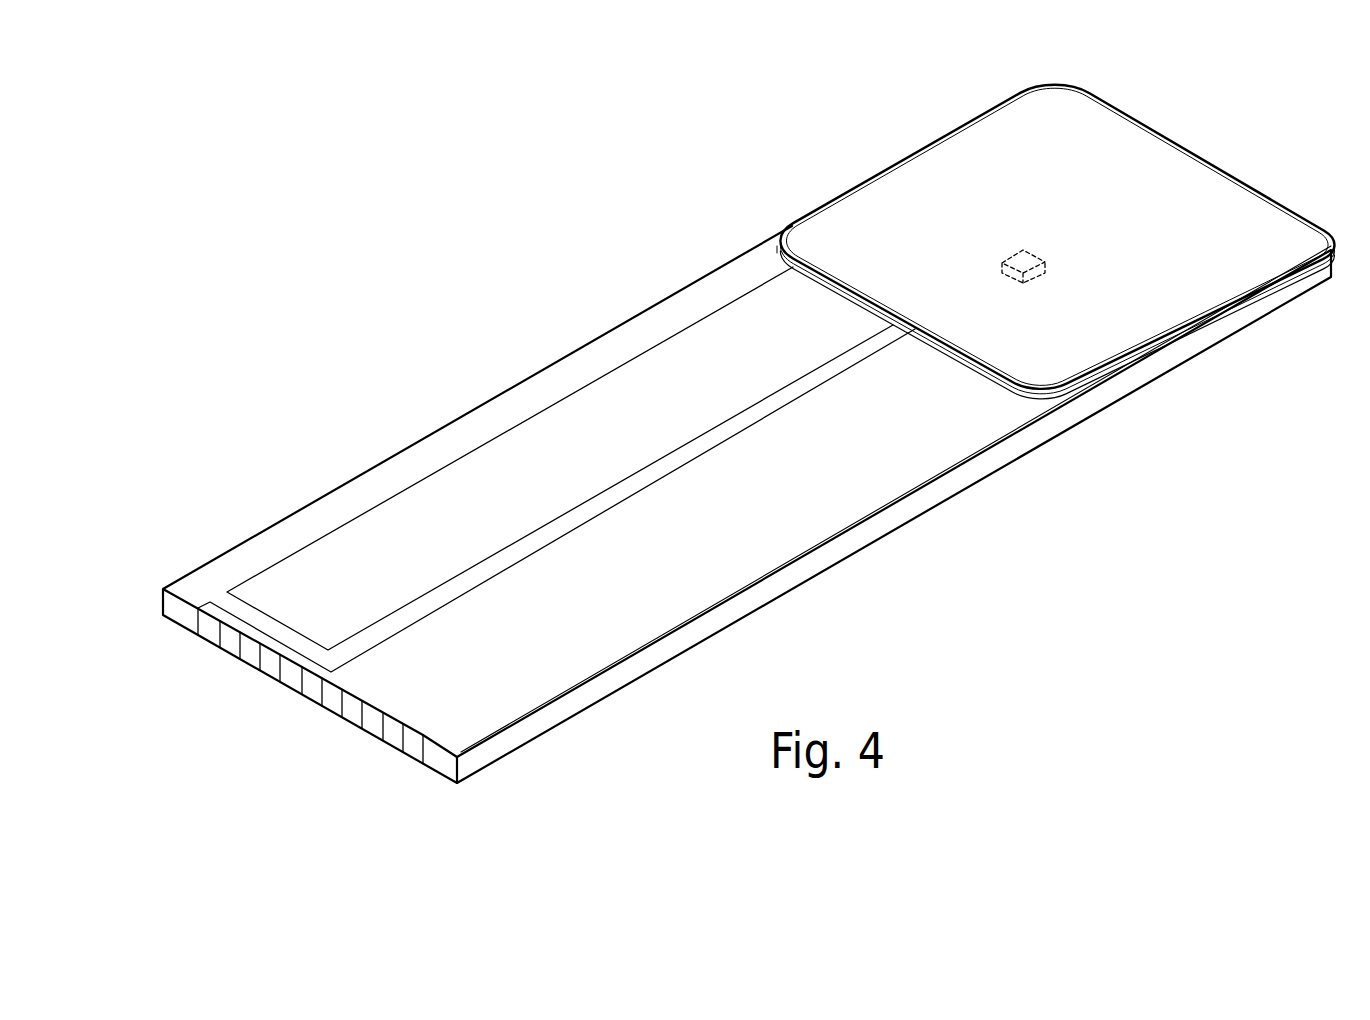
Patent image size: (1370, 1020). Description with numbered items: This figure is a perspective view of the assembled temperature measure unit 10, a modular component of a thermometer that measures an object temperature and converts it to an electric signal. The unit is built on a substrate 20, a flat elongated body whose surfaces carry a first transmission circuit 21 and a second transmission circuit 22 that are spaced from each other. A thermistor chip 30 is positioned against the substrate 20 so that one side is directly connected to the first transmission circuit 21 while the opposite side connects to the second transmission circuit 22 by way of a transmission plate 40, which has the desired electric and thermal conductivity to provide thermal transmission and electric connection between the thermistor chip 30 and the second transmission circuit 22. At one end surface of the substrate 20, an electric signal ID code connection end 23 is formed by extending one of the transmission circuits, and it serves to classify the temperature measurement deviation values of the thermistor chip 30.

The temperature measure unit 10 is at (749, 434).
The substrate 20 is at (1043, 446).
The first transmission circuit 21 is at (522, 445).
The second transmission circuit 22 is at (740, 521).
The electric signal ID code connection end 23 is at (327, 698).
The thermistor chip 30 is at (1017, 250).
The transmission plate 40 is at (1215, 184).